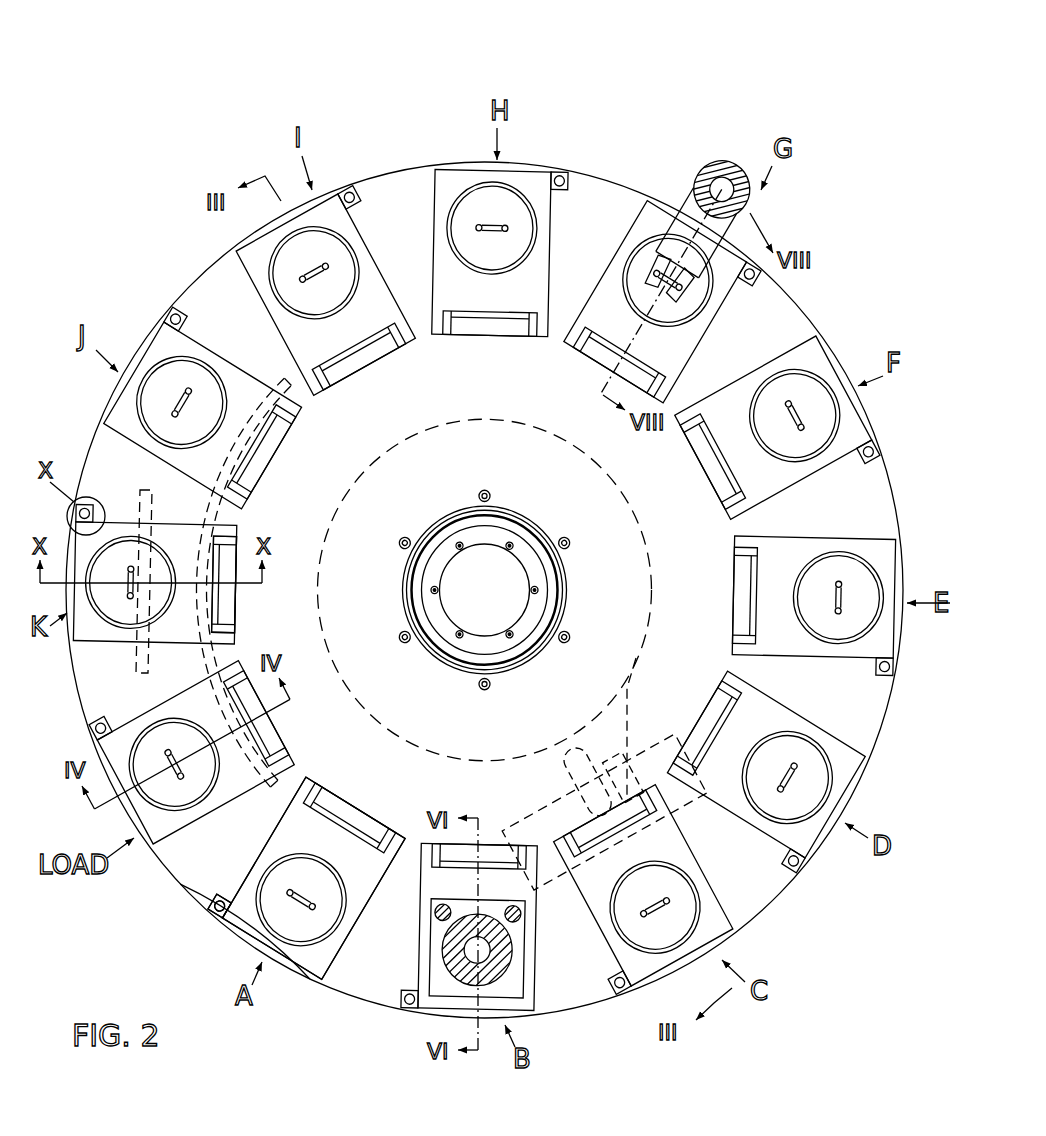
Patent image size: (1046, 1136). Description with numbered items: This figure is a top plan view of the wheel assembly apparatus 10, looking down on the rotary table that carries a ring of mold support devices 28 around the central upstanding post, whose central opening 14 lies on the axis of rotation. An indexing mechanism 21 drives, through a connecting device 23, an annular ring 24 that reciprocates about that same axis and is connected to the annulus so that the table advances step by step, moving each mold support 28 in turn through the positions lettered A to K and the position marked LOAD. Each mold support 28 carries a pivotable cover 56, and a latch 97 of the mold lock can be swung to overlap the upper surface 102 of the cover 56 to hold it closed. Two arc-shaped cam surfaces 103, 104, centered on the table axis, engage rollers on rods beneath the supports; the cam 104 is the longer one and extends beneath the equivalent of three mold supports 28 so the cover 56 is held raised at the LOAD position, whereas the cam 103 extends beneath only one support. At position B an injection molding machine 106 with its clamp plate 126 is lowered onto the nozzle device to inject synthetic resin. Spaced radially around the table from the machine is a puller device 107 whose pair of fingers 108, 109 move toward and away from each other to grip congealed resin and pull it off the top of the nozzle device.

The wheel assembly apparatus 10 is at (455, 95).
The central opening 14 is at (512, 630).
The indexing mechanism 21 is at (648, 743).
The connecting device 23 is at (523, 790).
The annular ring 24 is at (383, 731).
The mold support device 28 is at (246, 942).
The cover 56 is at (313, 968).
The latch 97 is at (232, 900).
The upper surface of the cover 102 is at (241, 897).
The cam surface 103 is at (140, 662).
The cam surface 104 is at (232, 655).
The injection molding machine 106 is at (452, 988).
The puller device 107 is at (752, 212).
The finger 108 is at (653, 280).
The finger 109 is at (682, 295).
The clamp plate 126 is at (518, 975).